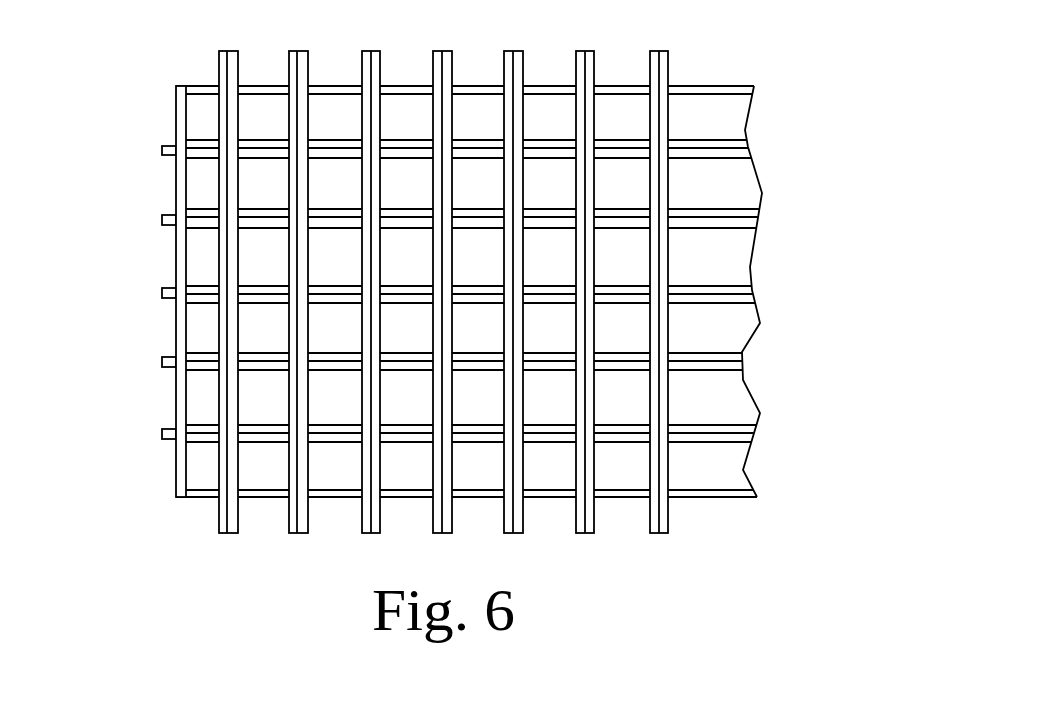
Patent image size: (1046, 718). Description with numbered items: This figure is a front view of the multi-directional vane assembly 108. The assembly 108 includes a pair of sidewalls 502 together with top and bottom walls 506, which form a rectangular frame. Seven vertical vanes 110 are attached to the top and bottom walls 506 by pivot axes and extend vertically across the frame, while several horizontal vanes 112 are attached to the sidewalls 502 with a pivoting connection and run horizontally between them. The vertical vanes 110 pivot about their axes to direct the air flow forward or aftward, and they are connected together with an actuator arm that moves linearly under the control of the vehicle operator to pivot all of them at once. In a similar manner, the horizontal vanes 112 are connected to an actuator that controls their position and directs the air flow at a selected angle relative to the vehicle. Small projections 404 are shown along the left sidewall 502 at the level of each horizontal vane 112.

The multi-directional vane assembly 108 is at (821, 54).
The vertical vanes 110 is at (232, 533).
The horizontal vanes 112 is at (700, 140).
The mounting tabs 404 is at (162, 221).
The sidewalls 502 is at (175, 132).
The top and bottom walls 506 is at (206, 86).